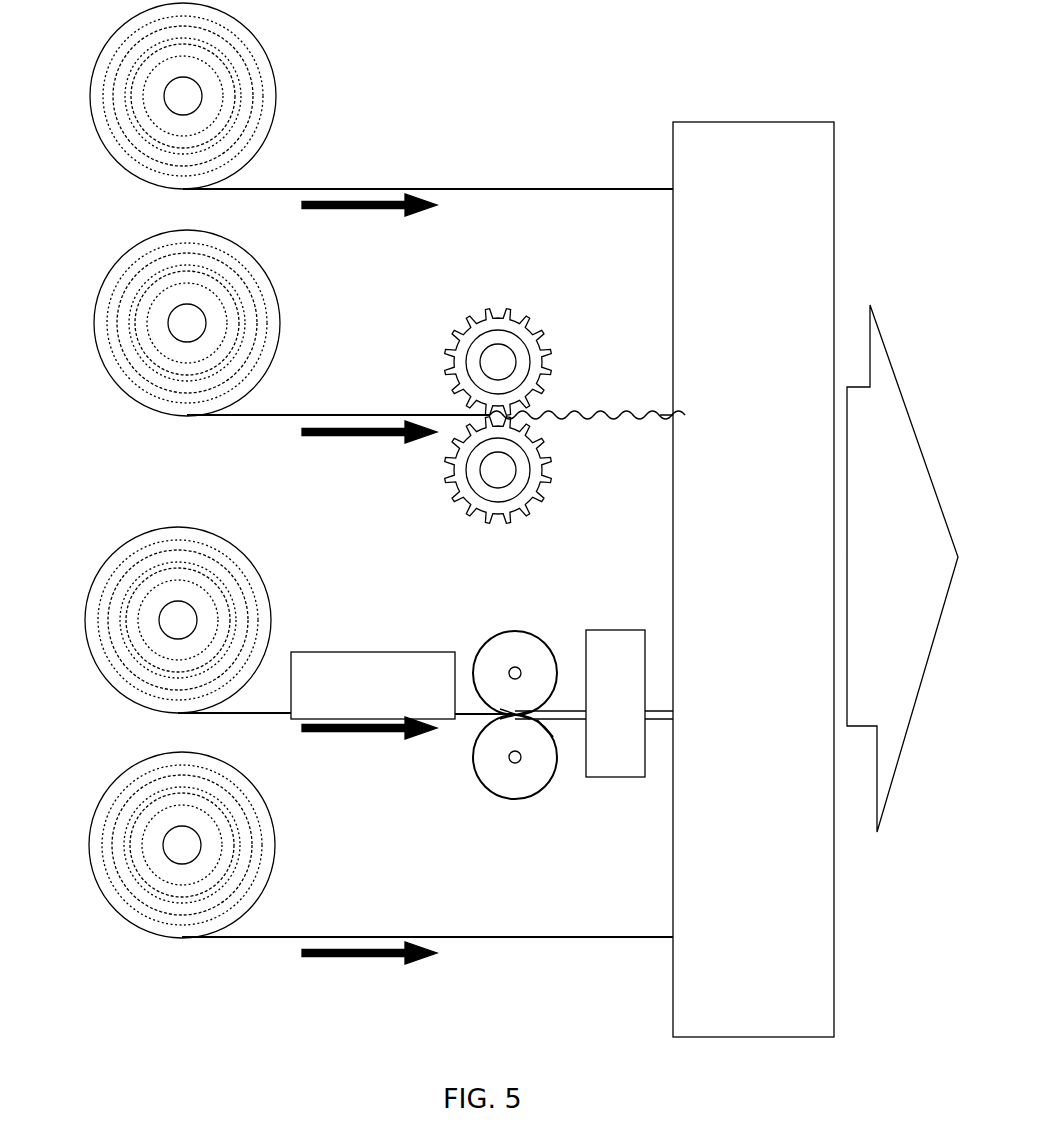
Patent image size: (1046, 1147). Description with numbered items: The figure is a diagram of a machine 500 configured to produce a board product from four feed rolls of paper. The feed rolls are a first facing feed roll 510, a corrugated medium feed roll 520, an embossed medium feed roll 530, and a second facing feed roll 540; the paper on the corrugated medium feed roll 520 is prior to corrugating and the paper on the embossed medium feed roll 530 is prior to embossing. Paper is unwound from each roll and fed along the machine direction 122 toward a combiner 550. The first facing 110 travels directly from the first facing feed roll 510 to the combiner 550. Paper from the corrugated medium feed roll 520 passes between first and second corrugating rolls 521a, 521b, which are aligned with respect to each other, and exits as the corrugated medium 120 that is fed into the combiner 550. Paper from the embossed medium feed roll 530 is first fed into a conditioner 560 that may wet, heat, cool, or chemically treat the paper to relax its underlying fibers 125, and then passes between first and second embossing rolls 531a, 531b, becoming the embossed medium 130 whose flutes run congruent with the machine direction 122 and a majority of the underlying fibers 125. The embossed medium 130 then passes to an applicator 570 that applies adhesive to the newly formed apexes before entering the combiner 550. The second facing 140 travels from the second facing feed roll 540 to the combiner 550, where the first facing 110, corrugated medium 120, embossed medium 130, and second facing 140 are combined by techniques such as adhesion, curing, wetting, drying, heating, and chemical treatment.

The machine 500 is at (554, 100).
The first facing feed roll 510 is at (100, 147).
The corrugated medium feed roll 520 is at (105, 376).
The embossed medium feed roll 530 is at (91, 668).
The second facing feed roll 540 is at (107, 908).
The first facing 110 is at (580, 197).
The corrugated medium 120 is at (608, 433).
The embossed medium 130 is at (560, 724).
The second facing 140 is at (612, 934).
The machine direction 122 is at (332, 212).
The underlying fibers 125 is at (525, 777).
The first corrugating roll 521a is at (544, 339).
The second corrugating roll 521b is at (443, 476).
The first embossing roll 531a is at (483, 636).
The second embossing roll 531b is at (466, 764).
The combiner 550 is at (815, 579).
The conditioner 560 is at (373, 685).
The applicator 570 is at (615, 703).